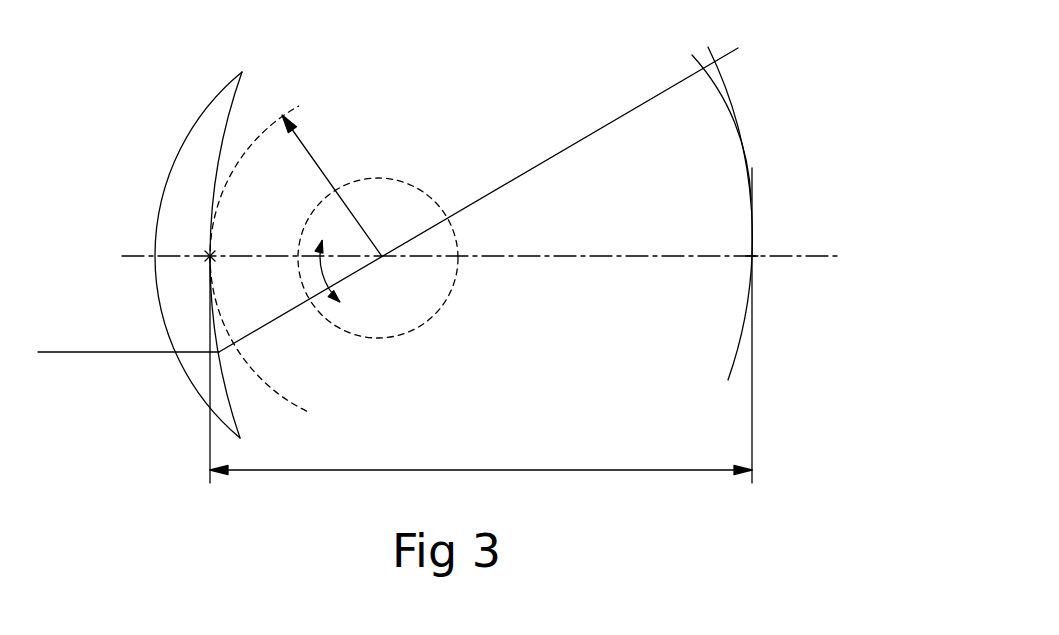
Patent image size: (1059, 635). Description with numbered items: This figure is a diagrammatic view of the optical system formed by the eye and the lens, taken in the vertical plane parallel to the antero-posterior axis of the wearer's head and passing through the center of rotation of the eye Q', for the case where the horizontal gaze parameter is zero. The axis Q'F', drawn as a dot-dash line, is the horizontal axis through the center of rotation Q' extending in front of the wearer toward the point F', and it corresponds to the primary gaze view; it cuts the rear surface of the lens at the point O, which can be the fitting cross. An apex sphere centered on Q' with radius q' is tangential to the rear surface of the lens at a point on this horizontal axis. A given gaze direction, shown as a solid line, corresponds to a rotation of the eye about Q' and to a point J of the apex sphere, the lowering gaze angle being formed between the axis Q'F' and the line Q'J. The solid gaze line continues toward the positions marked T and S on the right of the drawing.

The vertex of the lens / origin point on optical axis O is at (201, 245).
The incidence point of the incoming ray on the lens J is at (146, 351).
The image-side nodal/center point of the lens Q' is at (378, 258).
The image-side radius vector q' is at (332, 186).
The tangential image surface T is at (707, 125).
The sagittal image surface S is at (730, 199).
The image focal point F' is at (740, 239).